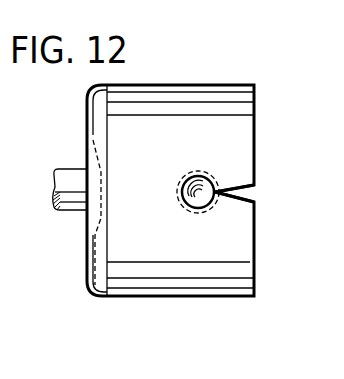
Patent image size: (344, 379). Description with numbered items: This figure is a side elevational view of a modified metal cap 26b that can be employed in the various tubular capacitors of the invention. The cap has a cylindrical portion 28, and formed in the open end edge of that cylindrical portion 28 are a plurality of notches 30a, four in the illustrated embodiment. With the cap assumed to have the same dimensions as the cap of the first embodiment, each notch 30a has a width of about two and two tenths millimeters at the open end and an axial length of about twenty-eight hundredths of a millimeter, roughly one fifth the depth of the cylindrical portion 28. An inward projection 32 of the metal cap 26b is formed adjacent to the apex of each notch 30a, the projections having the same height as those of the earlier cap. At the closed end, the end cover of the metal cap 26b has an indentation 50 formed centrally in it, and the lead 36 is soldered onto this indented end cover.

The cylindrical portion 28 is at (244, 129).
The modified metal cap 26b is at (83, 98).
The indentation 50 is at (92, 153).
The inward projection 32 is at (205, 176).
The notch 30a is at (245, 197).
The lead 36 is at (77, 213).